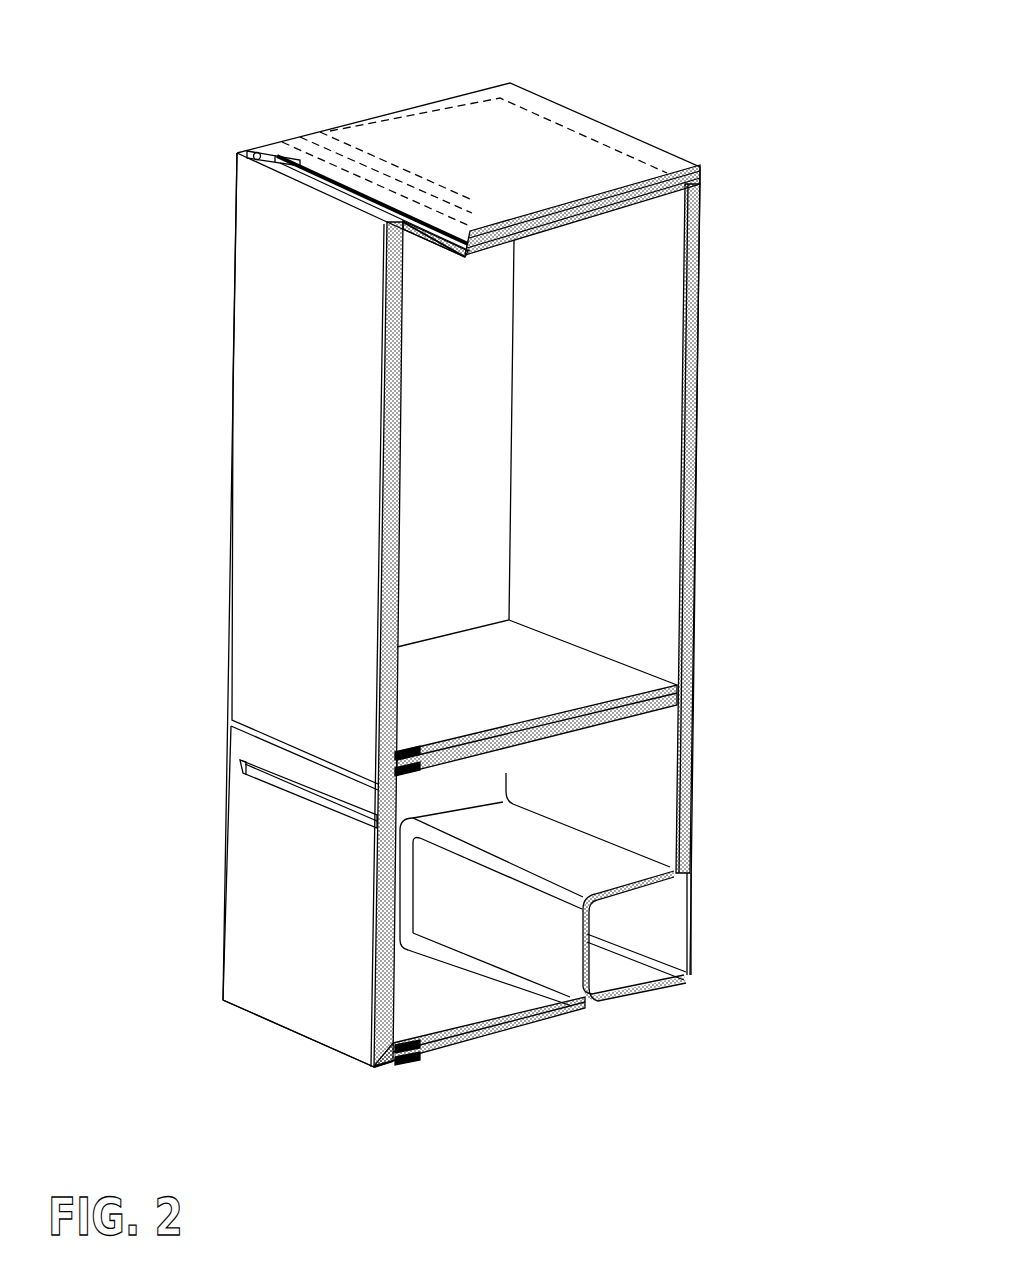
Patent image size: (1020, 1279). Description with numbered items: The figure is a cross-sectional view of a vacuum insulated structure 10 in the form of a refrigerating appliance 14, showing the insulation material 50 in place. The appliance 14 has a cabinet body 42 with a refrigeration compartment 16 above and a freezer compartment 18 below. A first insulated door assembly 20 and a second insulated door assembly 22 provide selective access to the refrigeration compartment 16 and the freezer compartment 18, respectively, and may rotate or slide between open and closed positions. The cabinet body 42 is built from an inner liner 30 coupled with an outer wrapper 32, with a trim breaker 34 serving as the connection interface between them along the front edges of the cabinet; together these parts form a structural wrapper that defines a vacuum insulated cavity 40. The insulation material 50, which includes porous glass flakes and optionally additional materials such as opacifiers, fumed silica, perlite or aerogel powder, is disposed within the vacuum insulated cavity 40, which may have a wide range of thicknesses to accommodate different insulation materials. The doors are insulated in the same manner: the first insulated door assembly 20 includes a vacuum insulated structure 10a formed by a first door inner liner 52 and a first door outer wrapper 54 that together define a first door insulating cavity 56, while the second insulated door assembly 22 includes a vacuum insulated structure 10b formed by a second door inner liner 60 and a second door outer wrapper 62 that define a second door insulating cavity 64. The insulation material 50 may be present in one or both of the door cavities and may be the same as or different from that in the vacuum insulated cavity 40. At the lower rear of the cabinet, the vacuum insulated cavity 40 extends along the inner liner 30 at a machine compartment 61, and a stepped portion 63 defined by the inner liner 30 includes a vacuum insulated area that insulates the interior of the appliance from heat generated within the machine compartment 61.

The vacuum insulated structure 10 is at (442, 580).
The vacuum insulated structure 10a is at (220, 448).
The vacuum insulated structure 10b is at (240, 915).
The refrigerating appliance 14 is at (249, 134).
The refrigeration compartment 16 is at (587, 603).
The freezer compartment 18 is at (537, 948).
The first insulated door assembly 20 is at (261, 448).
The second insulated door assembly 22 is at (242, 915).
The inner liner 30 is at (612, 200).
The outer wrapper 32 is at (543, 213).
The trim breaker 34 is at (433, 240).
The vacuum insulated cavity 40 is at (705, 338).
The cabinet body 42 is at (550, 137).
The insulation material 50 is at (436, 625).
The first door inner liner 52 is at (387, 510).
The first door outer wrapper 54 is at (240, 247).
The first door insulating cavity 56 is at (383, 589).
The second door inner liner 60 is at (378, 1010).
The machine compartment 61 is at (670, 937).
The second door outer wrapper 62 is at (308, 1000).
The stepped portion 63 is at (648, 882).
The second door insulating cavity 64 is at (376, 862).